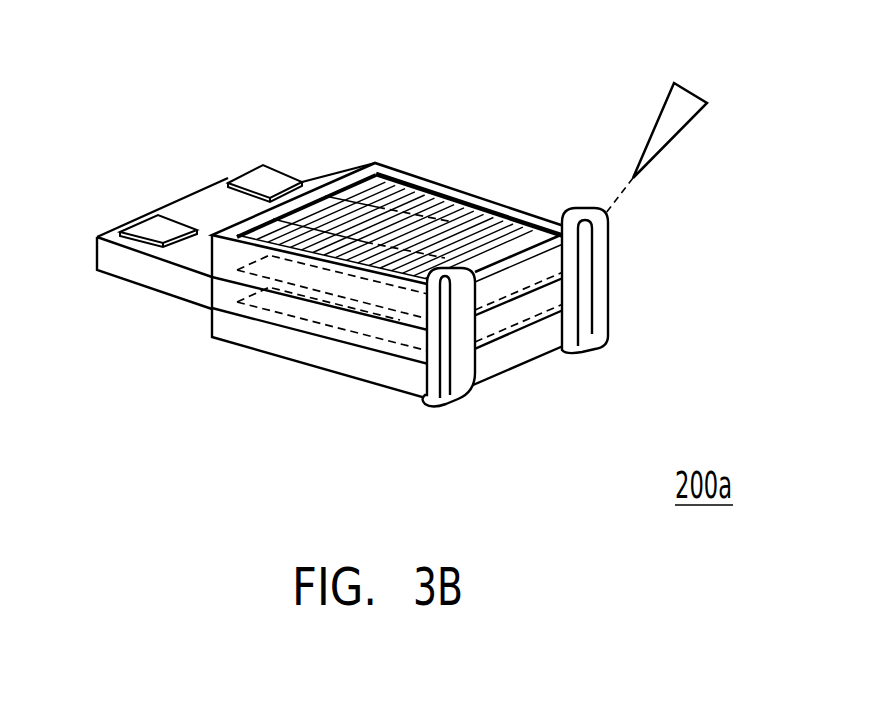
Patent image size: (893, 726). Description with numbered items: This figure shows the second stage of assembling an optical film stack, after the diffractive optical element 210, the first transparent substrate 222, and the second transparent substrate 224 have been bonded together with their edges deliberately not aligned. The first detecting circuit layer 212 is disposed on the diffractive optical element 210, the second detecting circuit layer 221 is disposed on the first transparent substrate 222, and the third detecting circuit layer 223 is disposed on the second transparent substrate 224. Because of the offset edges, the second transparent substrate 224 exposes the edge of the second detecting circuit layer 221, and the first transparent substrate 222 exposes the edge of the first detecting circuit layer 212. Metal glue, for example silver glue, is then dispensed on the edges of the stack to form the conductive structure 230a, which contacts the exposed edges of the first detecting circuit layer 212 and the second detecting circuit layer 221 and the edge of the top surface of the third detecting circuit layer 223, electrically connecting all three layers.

The diffractive optical element 210 is at (290, 343).
The first detecting circuit layer 212 is at (363, 343).
The second detecting circuit layer 221 is at (255, 275).
The first transparent substrate 222 is at (162, 272).
The third detecting circuit layer 223 is at (485, 218).
The second transparent substrate 224 is at (352, 183).
The conductive structure 230a is at (599, 292).